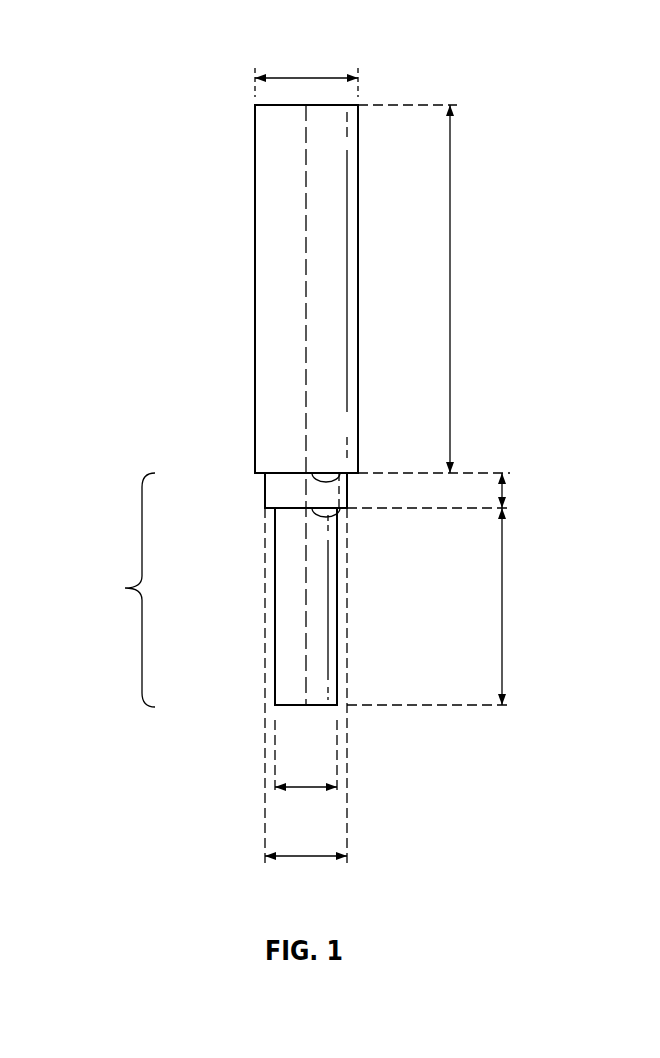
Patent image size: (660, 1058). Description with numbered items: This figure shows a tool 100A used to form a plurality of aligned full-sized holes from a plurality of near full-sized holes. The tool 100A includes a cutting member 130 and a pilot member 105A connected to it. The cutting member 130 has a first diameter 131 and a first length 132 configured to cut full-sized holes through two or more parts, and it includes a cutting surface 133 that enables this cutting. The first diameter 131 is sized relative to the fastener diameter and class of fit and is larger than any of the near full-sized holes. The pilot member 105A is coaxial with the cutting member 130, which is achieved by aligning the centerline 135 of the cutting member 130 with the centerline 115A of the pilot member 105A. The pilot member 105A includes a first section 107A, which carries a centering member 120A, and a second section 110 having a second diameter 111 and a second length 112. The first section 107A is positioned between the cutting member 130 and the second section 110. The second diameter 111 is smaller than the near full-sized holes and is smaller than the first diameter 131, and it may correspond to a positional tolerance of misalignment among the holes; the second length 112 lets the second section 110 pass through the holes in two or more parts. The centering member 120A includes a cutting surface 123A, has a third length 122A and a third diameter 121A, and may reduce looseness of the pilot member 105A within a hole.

The tool 100A is at (487, 69).
The cutting member 130 is at (255, 132).
The first diameter 131 is at (262, 77).
The first length 132 is at (450, 283).
The cutting surface 133 is at (340, 473).
The centerline 135 is at (306, 290).
The pilot member 105A is at (330, 696).
The centering member 120A is at (265, 485).
The third length 122A is at (503, 490).
The cutting surface 123A is at (340, 508).
The first section 107A is at (264, 511).
The second section 110 is at (283, 706).
The second diameter 111 is at (290, 790).
The second length 112 is at (503, 607).
The centerline 115A is at (306, 605).
The third diameter 121A is at (290, 860).